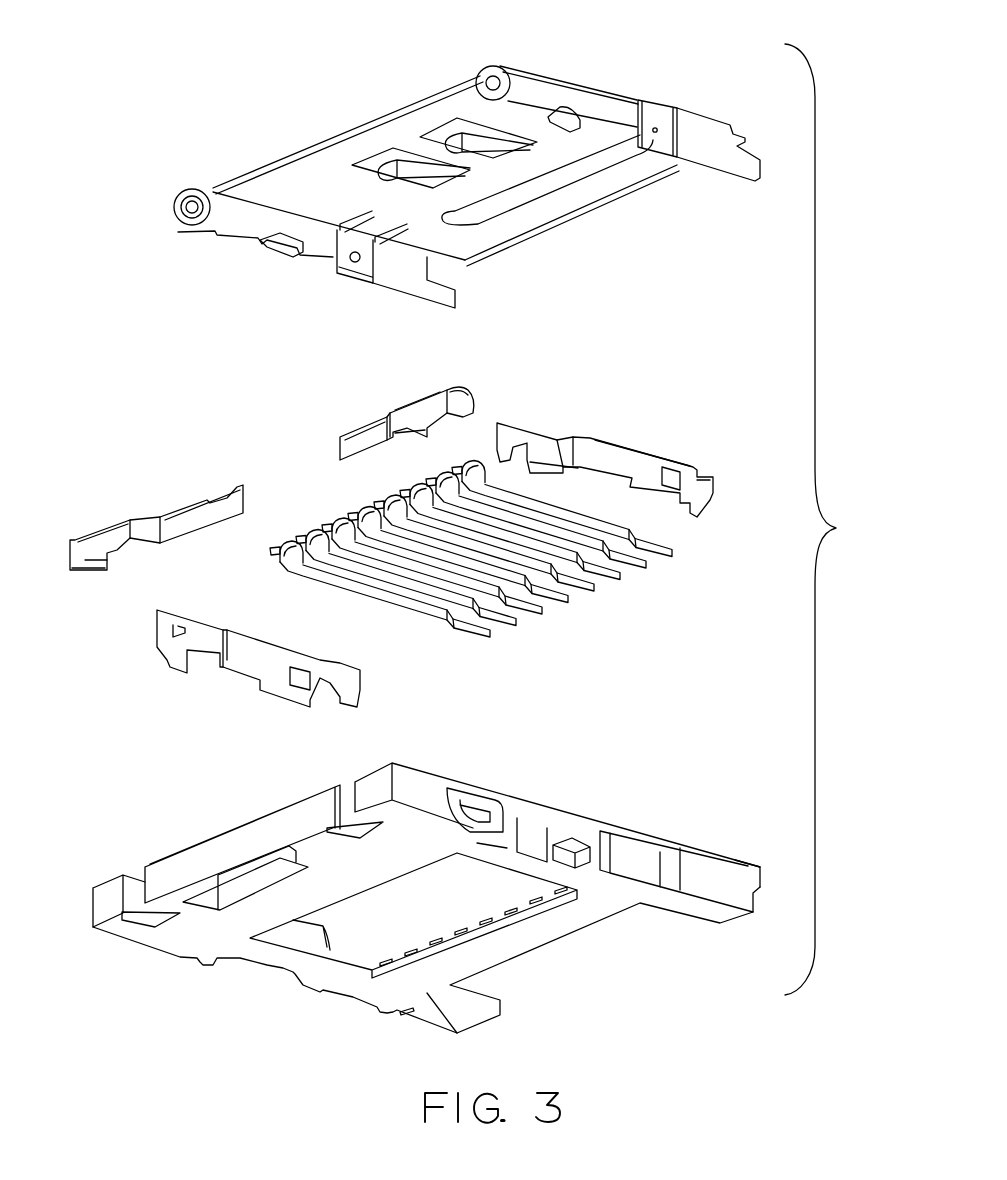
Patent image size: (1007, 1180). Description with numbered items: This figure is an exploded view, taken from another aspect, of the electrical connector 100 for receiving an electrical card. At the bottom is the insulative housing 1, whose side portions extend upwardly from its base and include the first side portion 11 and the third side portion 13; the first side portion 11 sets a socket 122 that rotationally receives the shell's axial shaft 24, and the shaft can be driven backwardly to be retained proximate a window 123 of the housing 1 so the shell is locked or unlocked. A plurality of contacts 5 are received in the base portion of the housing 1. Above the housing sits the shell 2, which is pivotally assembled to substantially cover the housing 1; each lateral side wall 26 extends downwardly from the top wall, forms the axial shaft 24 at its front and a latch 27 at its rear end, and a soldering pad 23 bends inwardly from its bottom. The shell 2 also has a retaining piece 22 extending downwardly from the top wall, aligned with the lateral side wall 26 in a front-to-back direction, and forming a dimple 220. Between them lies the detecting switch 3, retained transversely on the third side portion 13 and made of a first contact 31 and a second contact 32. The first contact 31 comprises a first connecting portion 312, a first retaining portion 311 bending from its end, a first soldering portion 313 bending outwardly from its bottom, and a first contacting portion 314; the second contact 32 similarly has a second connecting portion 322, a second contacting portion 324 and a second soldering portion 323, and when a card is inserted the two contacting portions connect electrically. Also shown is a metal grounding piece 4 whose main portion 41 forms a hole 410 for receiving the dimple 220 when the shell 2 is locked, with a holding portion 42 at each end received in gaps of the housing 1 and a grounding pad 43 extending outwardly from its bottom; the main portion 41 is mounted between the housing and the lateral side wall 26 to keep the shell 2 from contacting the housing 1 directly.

The electrical connector 100 is at (837, 528).
The insulative housing 1 is at (446, 877).
The first side portion 11 is at (650, 852).
The third side portion 13 is at (267, 830).
The socket 122 is at (470, 807).
The window 123 is at (530, 823).
The shell 2 is at (452, 183).
The retaining piece 22 is at (668, 130).
The soldering pad 23 is at (582, 120).
The axial shaft 24 is at (193, 196).
The lateral side wall 26 is at (582, 97).
The latch 27 is at (753, 164).
The dimple 220 is at (355, 263).
The detecting switch 3 is at (267, 481).
The first contact 31 is at (378, 415).
The first retaining portion 311 is at (470, 392).
The first connecting portion 312 is at (412, 410).
The first soldering portion 313 is at (403, 436).
The first contacting portion 314 is at (358, 430).
The second contact 32 is at (138, 519).
The second connecting portion 322 is at (98, 540).
The second soldering portion 323 is at (85, 572).
The second contacting portion 324 is at (188, 513).
The grounding piece 4 is at (641, 451).
The main portion 41 is at (614, 450).
The hole 410 is at (677, 475).
The holding portion 42 is at (710, 498).
The grounding pad 43 is at (560, 478).
The contacts 5 is at (592, 636).